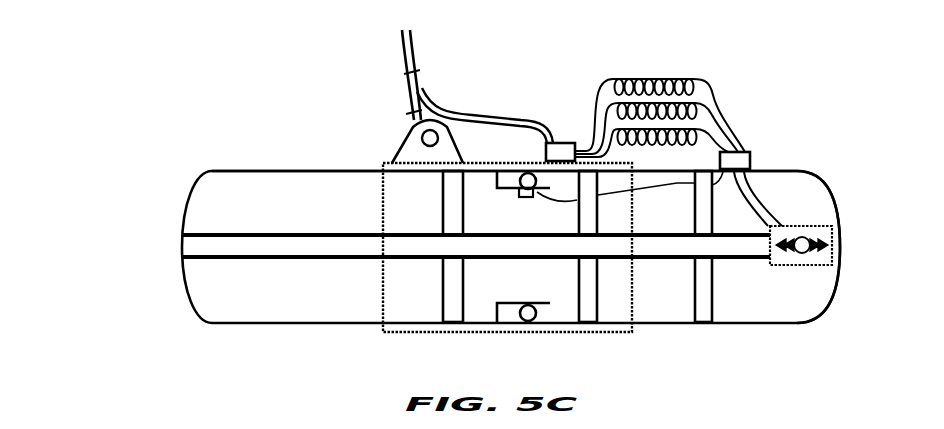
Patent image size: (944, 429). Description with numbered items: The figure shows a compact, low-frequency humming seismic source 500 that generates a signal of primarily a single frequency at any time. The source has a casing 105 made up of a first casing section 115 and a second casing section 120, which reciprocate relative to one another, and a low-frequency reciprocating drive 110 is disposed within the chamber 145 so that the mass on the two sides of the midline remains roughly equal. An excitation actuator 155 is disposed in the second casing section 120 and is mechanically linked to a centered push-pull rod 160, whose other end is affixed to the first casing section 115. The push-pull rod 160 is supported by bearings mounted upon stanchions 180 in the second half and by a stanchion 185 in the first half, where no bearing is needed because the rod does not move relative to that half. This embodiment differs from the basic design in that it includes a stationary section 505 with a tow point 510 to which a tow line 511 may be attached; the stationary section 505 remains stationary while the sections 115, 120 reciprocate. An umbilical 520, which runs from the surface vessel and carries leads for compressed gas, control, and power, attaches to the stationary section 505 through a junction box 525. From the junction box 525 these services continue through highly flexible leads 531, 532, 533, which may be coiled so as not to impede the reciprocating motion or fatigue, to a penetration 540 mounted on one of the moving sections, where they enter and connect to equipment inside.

The seismic source 500 is at (98, 109).
The casing 105 is at (207, 159).
The low-frequency reciprocating drive 110 is at (800, 210).
The first casing section 115 is at (317, 168).
The second casing section 120 is at (810, 177).
The chamber 145 is at (370, 288).
The excitation actuator 155 is at (800, 255).
The push-pull rod 160 is at (392, 233).
The stanchions 180 is at (575, 265).
The stanchion 185 is at (465, 285).
The stationary section 505 is at (385, 160).
The tow point 510 is at (408, 140).
The tow line 511 is at (405, 62).
The umbilical 520 is at (473, 120).
The junction box 525 is at (562, 143).
The flexible lead 531 is at (690, 78).
The flexible lead 532 is at (697, 101).
The flexible lead 533 is at (703, 128).
The penetration 540 is at (752, 152).